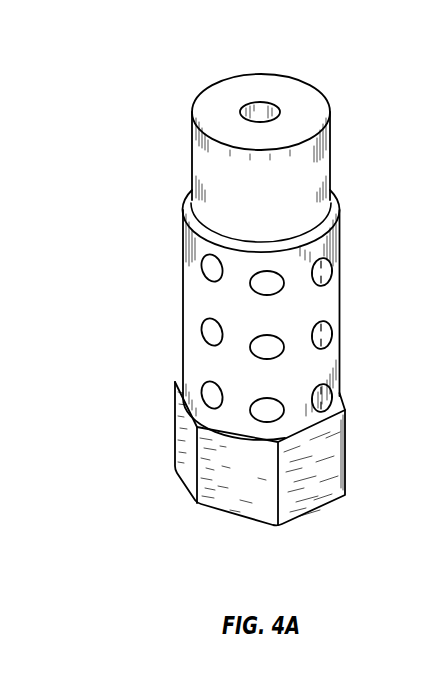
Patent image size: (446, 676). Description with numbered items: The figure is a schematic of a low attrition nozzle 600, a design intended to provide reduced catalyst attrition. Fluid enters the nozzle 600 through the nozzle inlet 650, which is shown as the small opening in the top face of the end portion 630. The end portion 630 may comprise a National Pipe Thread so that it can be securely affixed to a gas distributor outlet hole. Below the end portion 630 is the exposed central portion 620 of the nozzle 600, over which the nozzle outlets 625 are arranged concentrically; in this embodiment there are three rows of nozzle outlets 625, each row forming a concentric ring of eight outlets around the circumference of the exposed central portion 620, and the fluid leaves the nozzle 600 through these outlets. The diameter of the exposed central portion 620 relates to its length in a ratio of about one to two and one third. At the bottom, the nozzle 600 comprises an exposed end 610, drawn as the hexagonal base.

The nozzle 600 is at (122, 48).
The exposed end 610 is at (175, 440).
The exposed central portion 620 is at (183, 295).
The nozzle outlets 625 is at (203, 337).
The end portion 630 is at (193, 140).
The nozzle inlet 650 is at (260, 110).